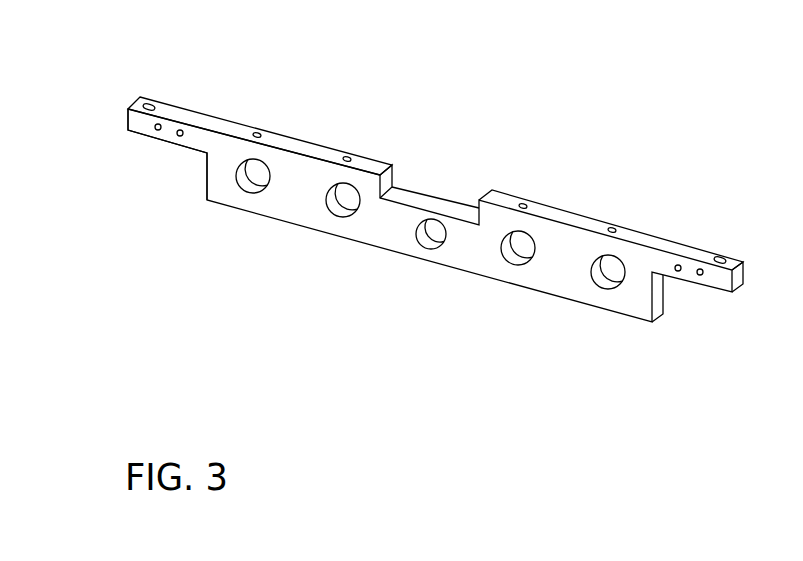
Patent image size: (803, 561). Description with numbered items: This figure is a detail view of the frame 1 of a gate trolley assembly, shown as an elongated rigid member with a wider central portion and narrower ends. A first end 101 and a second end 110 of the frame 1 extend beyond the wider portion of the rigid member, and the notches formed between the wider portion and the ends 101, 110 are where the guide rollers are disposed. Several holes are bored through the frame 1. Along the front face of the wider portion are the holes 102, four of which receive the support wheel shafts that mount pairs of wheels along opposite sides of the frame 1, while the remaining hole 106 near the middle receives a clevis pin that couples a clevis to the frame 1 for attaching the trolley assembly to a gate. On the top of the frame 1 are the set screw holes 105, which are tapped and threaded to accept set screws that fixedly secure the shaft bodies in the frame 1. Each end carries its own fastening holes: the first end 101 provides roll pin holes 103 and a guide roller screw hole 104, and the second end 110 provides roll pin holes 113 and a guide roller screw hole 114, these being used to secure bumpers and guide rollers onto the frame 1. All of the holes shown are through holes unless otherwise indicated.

The frame 1 is at (418, 200).
The first end 101 is at (735, 290).
The holes 102 is at (341, 202).
The roll pin holes 103 is at (696, 275).
The guide roller screw holes 104 is at (718, 256).
The set screw holes 105 is at (612, 227).
The hole 106 is at (430, 235).
The second end 110 is at (127, 117).
The roll pin holes 113 is at (155, 130).
The guide roller screw holes 114 is at (147, 104).